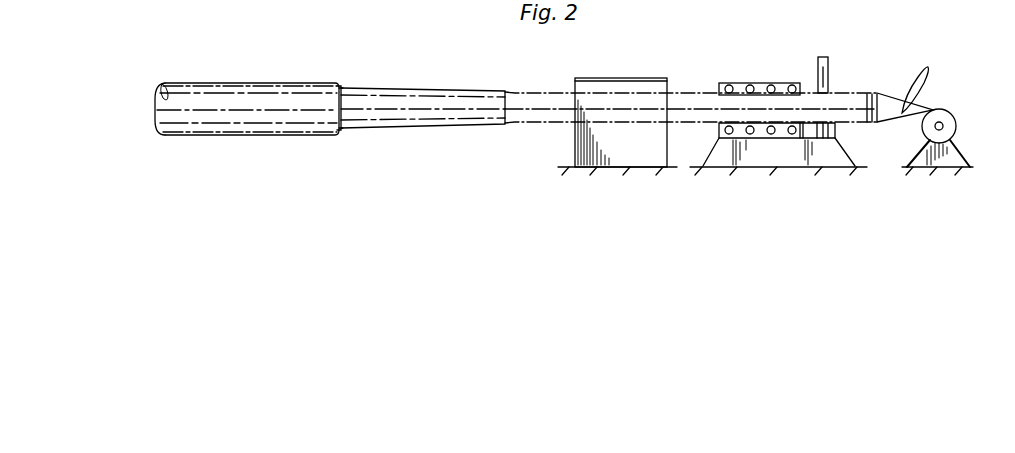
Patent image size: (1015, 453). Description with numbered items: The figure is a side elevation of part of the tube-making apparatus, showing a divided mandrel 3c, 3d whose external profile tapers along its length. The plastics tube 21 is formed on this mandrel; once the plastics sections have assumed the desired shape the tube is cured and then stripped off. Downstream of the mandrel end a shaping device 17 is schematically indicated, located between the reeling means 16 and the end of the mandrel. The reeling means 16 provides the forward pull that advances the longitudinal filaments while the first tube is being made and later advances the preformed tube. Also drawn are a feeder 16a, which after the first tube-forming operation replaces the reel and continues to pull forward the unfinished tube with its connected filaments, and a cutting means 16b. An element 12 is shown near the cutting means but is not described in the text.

The divided mandrel section 3c is at (250, 98).
The plastics tube 21 is at (331, 84).
The divided mandrel section 3d is at (409, 102).
The shaping device 17 is at (630, 92).
The feeder 16a is at (770, 62).
The cutting means 16b is at (862, 72).
The blade 12 is at (926, 80).
The reeling means 16 is at (950, 109).